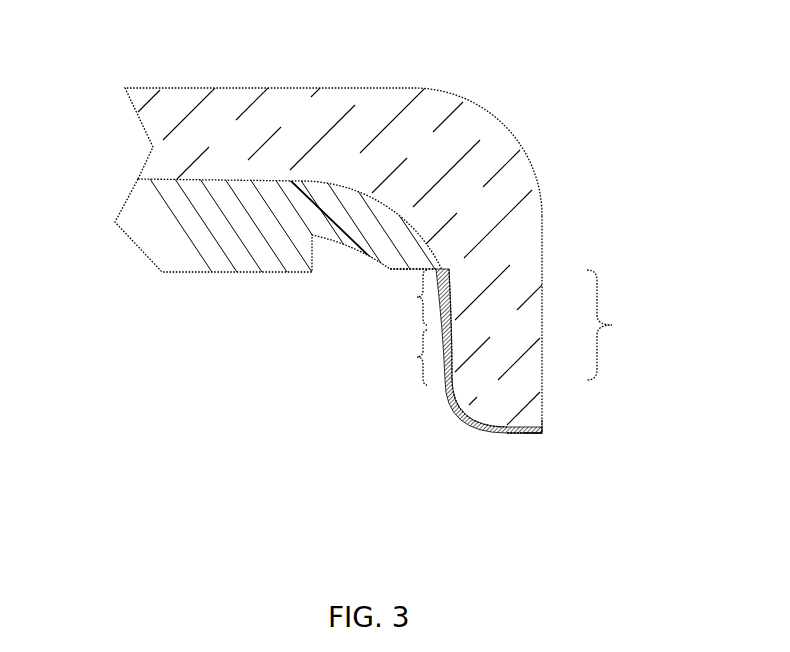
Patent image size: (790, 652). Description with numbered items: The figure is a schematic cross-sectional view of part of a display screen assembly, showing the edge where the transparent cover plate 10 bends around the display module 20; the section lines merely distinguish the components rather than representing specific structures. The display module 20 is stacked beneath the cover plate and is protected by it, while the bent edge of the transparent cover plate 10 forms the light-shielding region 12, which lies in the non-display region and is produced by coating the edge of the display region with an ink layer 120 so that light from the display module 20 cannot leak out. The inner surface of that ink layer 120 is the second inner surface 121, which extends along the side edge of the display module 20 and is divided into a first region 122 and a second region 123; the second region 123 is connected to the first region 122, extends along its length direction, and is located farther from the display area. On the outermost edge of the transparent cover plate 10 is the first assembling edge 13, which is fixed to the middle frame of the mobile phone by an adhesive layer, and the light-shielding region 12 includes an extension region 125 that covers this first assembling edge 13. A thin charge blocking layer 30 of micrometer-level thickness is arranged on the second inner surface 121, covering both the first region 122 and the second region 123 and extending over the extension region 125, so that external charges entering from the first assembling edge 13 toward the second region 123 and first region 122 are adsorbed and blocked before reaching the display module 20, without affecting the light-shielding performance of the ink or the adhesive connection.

The transparent cover plate 10 is at (217, 133).
The display module 20 is at (210, 237).
The charge blocking layer 30 is at (442, 380).
The light-shielding region 12 is at (575, 324).
The second inner surface 121 is at (444, 383).
The first region 122 is at (404, 297).
The second region 123 is at (400, 357).
The ink layer 120 is at (449, 390).
The extension region 125 is at (503, 433).
The first assembling edge 13 is at (535, 434).